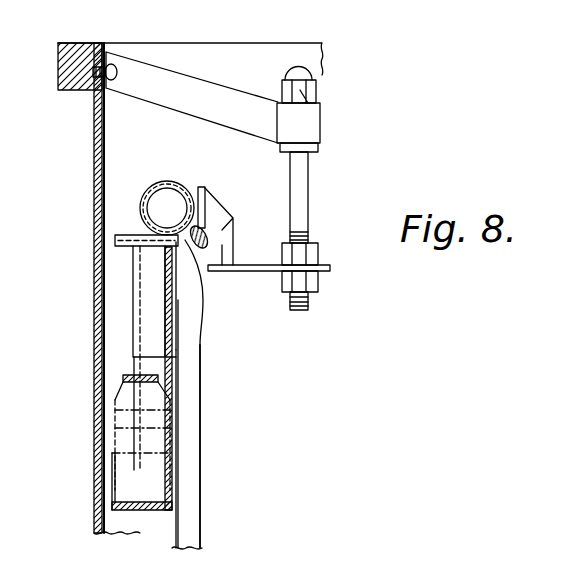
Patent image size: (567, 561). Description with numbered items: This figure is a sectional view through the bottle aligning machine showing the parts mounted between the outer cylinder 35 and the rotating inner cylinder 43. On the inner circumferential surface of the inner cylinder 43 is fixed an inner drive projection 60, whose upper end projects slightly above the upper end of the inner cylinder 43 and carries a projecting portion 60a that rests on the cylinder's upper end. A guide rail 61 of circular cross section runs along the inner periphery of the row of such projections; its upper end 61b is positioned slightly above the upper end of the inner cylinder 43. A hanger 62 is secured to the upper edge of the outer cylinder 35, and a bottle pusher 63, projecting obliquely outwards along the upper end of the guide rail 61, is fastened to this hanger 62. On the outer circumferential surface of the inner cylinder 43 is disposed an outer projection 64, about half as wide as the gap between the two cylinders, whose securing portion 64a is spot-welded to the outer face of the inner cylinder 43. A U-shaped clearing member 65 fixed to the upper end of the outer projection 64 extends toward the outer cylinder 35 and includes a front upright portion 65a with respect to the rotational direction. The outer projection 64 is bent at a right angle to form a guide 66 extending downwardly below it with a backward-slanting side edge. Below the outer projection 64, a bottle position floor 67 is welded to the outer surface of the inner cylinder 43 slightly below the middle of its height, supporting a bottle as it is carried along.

The outer cylinder 35 is at (96, 300).
The inner cylinder 43 is at (198, 442).
The inner drive projection 60 is at (182, 400).
The projecting portion 60a is at (190, 295).
The guide rail 61 is at (222, 280).
The upper end of guide rail 61b is at (212, 250).
The hanger 62 is at (300, 198).
The bottle pusher 63 is at (206, 240).
The outer projection 64 is at (133, 330).
The securing portion 64a is at (174, 358).
The U-shaped clearing member 65 is at (120, 245).
The front upright portion 65a is at (122, 234).
The guide 66 is at (124, 378).
The bottle position floor 67 is at (132, 518).